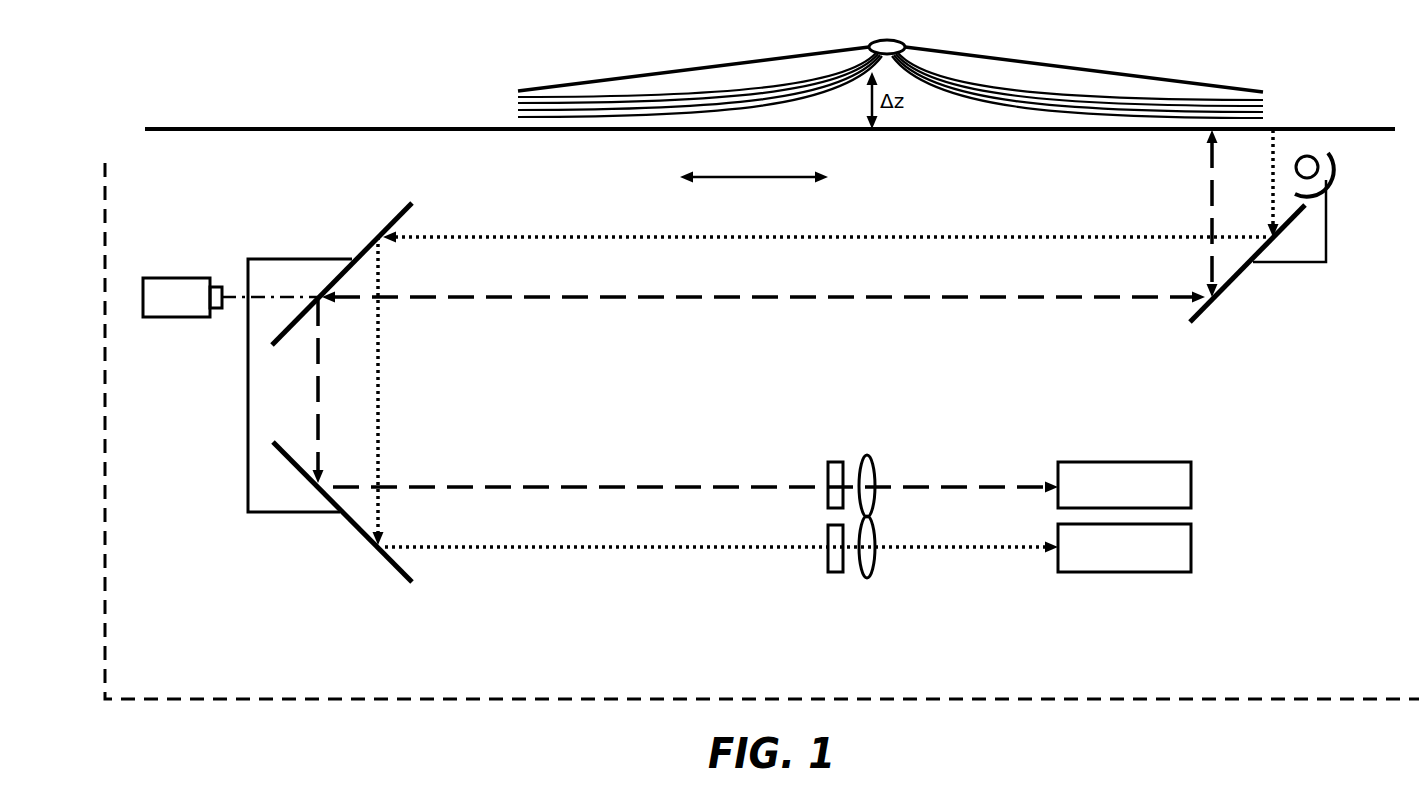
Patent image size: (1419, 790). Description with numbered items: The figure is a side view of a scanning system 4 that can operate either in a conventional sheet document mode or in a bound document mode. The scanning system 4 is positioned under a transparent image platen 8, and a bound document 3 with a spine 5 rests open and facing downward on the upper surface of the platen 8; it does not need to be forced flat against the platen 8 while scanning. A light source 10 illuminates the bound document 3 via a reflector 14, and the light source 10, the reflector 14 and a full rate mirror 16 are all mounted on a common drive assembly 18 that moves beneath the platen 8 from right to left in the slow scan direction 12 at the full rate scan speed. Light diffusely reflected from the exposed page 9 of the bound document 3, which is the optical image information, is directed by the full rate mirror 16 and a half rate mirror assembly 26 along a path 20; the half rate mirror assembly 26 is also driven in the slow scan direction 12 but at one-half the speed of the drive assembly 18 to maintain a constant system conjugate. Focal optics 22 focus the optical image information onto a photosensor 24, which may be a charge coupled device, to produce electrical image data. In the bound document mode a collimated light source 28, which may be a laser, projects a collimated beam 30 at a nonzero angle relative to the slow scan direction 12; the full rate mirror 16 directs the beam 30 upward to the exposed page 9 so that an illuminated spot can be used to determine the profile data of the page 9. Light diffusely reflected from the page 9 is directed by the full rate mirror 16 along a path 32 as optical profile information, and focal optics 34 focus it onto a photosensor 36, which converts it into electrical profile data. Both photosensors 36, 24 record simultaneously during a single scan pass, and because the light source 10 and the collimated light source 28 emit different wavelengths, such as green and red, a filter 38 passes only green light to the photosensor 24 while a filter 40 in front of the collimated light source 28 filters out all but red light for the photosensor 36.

The bound document 3 is at (985, 52).
The scanning system 4 is at (975, 700).
The spine 5 is at (886, 40).
The transparent image platen 8 is at (362, 131).
The exposed page 9 is at (1012, 104).
The light source 10 is at (1305, 155).
The slow scan direction 12 is at (748, 178).
The reflector 14 is at (1335, 162).
The full rate mirror 16 is at (1238, 277).
The common drive assembly 18 is at (1326, 223).
The optical image information path 20 is at (555, 236).
The focal optics 22 is at (868, 578).
The photosensor 24 is at (1145, 573).
The half rate mirror assembly 26 is at (248, 395).
The collimated light source 28 is at (175, 278).
The collimated beam 30 is at (275, 295).
The optical profile information path 32 is at (620, 486).
The focal optics 34 is at (867, 455).
The photosensor 36 is at (1138, 462).
The filter 38 is at (837, 573).
The filter 40 is at (836, 462).